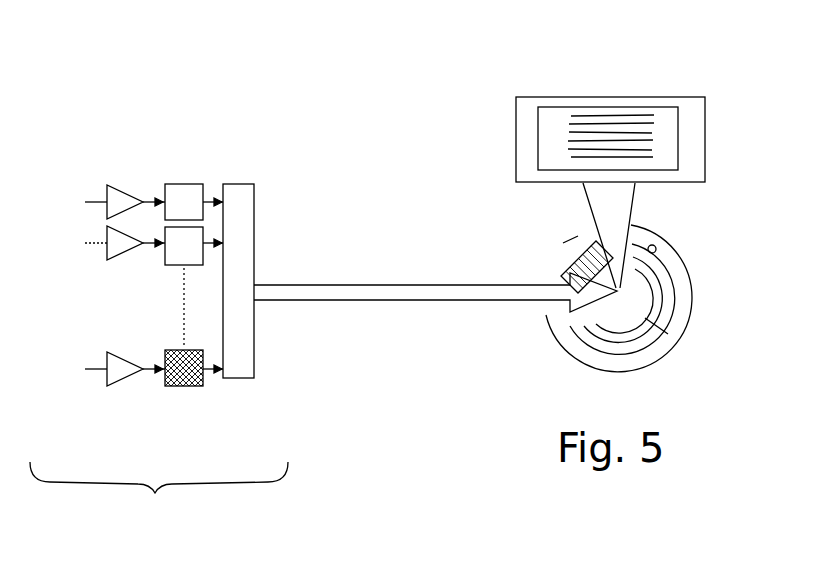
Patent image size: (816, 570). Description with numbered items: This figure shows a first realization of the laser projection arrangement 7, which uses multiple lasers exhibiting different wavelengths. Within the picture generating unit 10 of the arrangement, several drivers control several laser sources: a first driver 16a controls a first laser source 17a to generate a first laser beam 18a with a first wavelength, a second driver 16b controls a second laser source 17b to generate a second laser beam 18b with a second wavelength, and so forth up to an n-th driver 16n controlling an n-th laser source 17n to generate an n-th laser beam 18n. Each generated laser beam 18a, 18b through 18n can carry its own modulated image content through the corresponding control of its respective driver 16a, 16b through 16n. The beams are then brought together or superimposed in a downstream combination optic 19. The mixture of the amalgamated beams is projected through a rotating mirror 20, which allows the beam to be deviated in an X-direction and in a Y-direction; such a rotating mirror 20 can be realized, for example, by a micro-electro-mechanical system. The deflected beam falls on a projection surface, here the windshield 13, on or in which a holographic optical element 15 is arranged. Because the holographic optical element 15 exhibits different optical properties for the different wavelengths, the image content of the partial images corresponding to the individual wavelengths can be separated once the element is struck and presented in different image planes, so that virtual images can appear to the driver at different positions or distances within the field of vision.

The laser projection arrangement 7 is at (116, 99).
The picture generating unit 10 is at (159, 491).
The windshield 13 is at (693, 122).
The holographic optical element 15 is at (660, 107).
The first driver 16a is at (107, 192).
The second driver 16b is at (122, 256).
The n-th driver 16n is at (118, 381).
The first laser source 17a is at (181, 184).
The second laser source 17b is at (170, 263).
The n-th laser source 17n is at (180, 388).
The first laser beam 18a is at (209, 200).
The second laser beam 18b is at (254, 230).
The n-th laser beam 18n is at (212, 382).
The combination optic 19 is at (249, 198).
The rotating mirror 20 is at (622, 306).